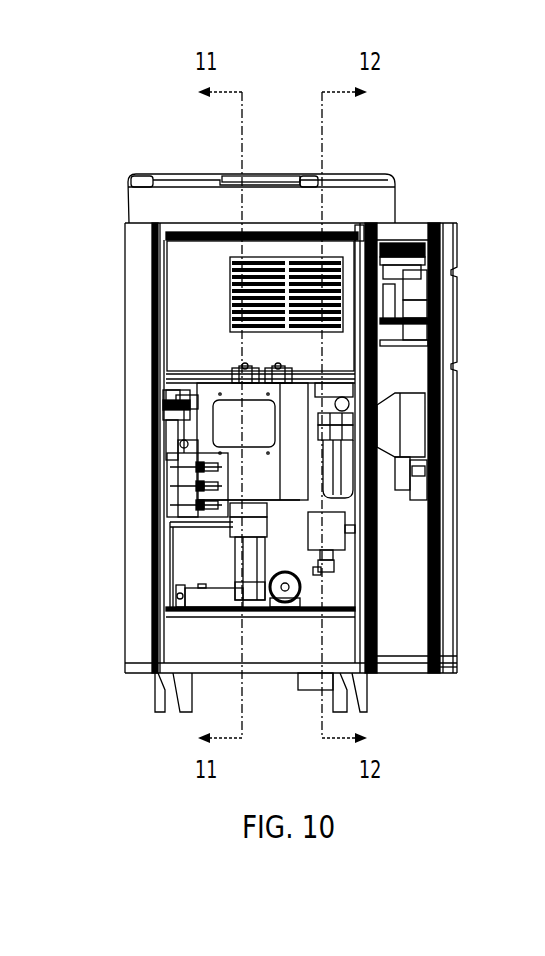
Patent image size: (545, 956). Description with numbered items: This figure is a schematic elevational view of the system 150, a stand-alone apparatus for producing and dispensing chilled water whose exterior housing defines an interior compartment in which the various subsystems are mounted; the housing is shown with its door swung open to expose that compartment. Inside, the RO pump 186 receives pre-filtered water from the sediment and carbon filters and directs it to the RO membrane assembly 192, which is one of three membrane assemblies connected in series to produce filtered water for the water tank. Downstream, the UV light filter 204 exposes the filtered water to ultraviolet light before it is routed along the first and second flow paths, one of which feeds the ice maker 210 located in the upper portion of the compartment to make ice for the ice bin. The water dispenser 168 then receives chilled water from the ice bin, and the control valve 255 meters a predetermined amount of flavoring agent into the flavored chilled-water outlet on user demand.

The system 150 is at (378, 122).
The ice maker 210 is at (183, 266).
The water dispenser 168 is at (226, 367).
The UV light filter 204 is at (160, 402).
The control valve 255 is at (178, 468).
The RO pump 186 is at (332, 525).
The RO membrane assembly 192 is at (312, 589).